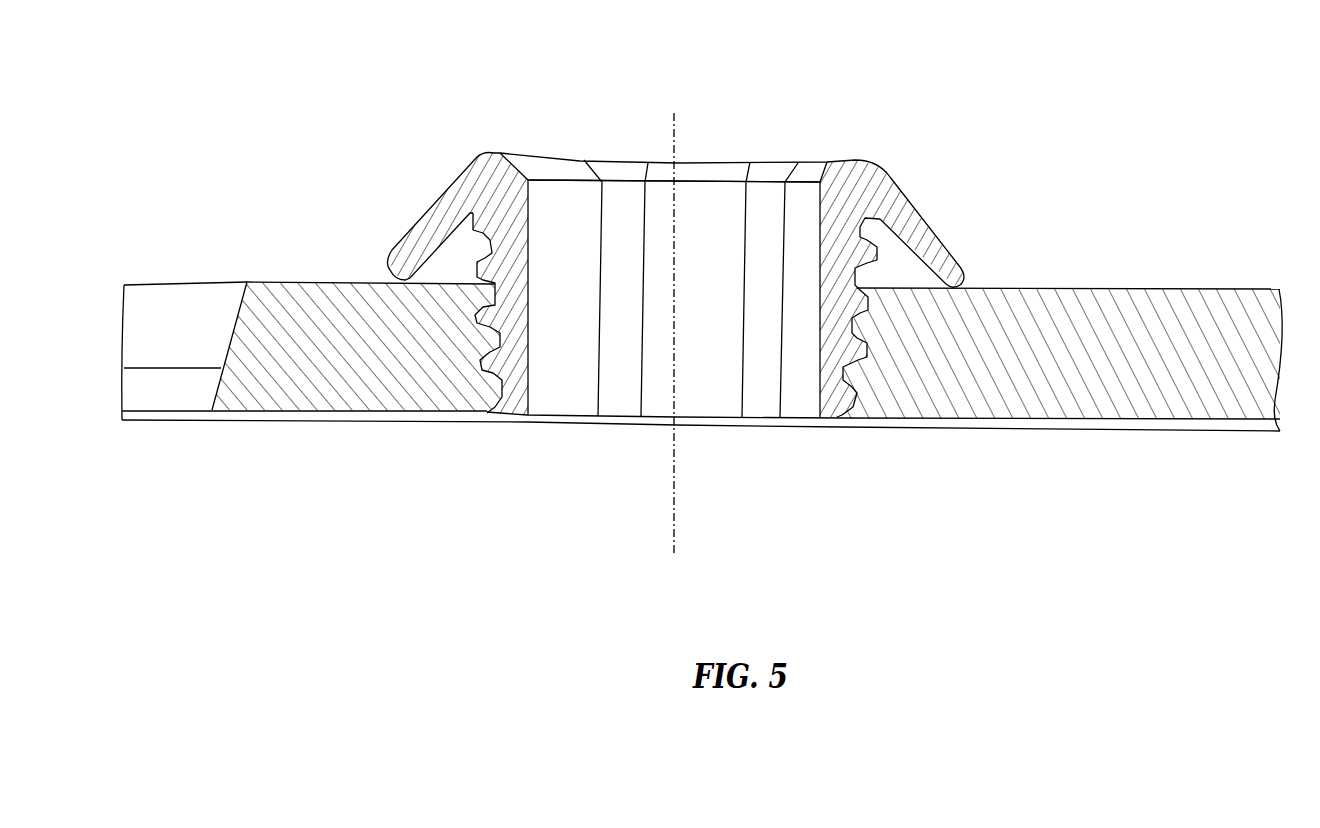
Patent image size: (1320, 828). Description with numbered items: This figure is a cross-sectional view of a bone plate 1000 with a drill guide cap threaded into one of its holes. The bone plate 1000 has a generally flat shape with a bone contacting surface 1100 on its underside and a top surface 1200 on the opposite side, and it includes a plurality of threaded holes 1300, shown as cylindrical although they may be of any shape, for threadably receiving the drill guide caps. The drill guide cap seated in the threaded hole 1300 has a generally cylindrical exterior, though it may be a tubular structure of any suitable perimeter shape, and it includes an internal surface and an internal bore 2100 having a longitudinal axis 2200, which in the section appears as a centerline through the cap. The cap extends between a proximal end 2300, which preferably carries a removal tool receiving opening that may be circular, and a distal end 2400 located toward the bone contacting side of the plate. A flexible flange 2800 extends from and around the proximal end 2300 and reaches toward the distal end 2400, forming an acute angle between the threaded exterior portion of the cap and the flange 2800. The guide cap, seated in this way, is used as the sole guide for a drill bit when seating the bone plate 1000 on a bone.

The bone plate 1000 is at (1046, 289).
The bone contacting surface 1100 is at (297, 280).
The top surface 1200 is at (273, 416).
The threaded holes 1300 is at (490, 414).
The internal bore 2100 is at (768, 174).
The longitudinal axis 2200 is at (833, 306).
The proximal end 2300 is at (853, 159).
The distal end 2400 is at (829, 420).
The flexible flange 2800 is at (412, 138).